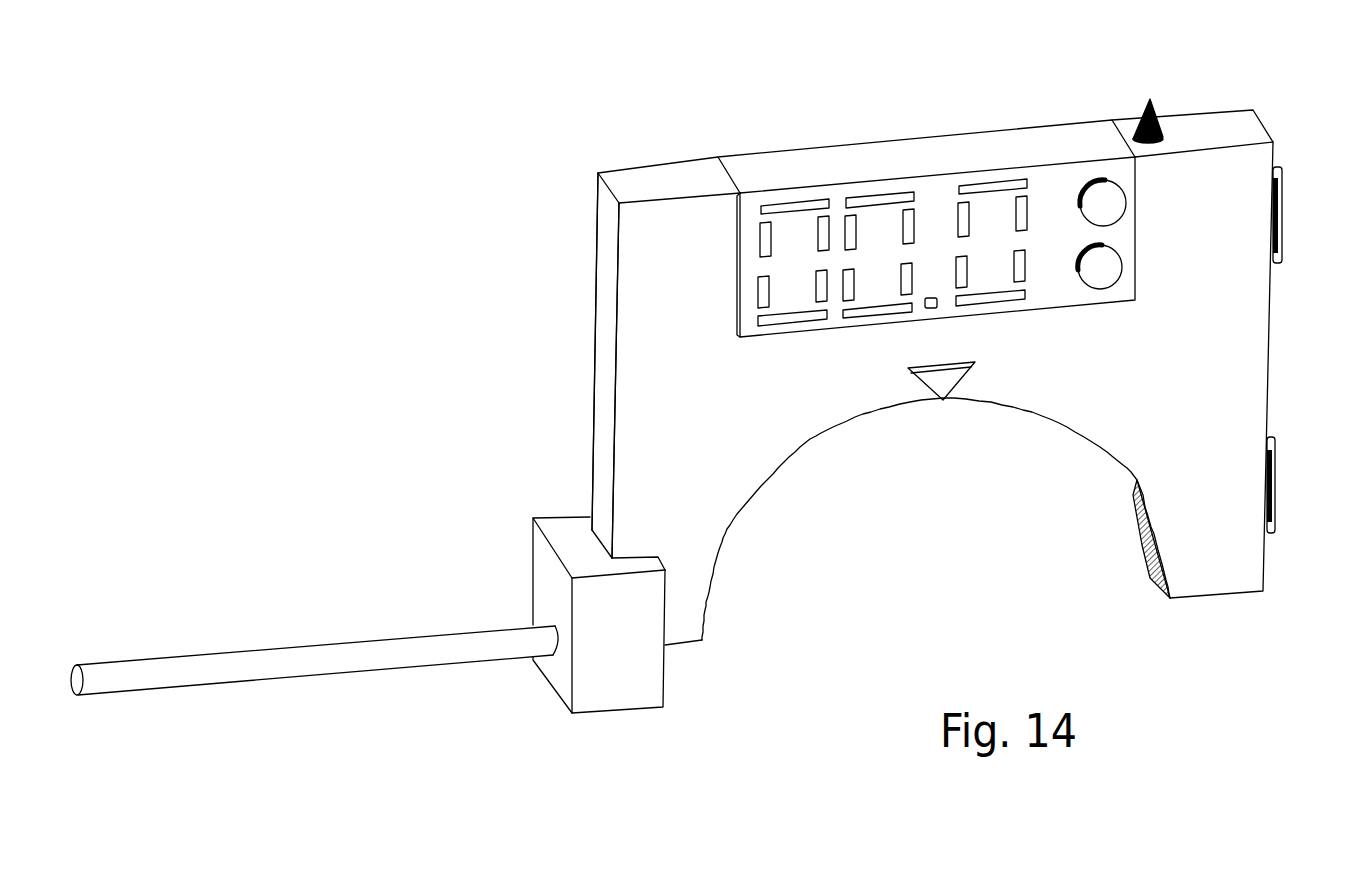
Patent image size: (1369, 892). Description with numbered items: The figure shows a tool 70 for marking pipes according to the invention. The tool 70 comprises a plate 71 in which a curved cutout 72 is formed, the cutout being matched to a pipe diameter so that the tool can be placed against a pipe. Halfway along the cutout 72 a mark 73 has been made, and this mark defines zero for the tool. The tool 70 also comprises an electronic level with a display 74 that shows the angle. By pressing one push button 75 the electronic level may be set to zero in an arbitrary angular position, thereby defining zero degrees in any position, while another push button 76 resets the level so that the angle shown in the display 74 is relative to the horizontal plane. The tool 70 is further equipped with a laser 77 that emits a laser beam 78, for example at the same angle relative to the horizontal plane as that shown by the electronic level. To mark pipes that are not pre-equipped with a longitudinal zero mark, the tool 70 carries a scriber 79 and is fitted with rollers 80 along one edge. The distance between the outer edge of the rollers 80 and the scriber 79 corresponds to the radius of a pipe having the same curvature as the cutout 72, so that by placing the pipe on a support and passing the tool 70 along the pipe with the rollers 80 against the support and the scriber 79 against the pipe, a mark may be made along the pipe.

The tool 70 is at (647, 167).
The plate 71 is at (627, 303).
The cutout 72 is at (765, 482).
The mark 73 is at (947, 380).
The display 74 is at (927, 197).
The push button 75 is at (1110, 195).
The push button 76 is at (1117, 263).
The laser 77 is at (645, 682).
The laser beam 78 is at (418, 637).
The scriber 79 is at (1153, 100).
The rollers 80 is at (1282, 205).